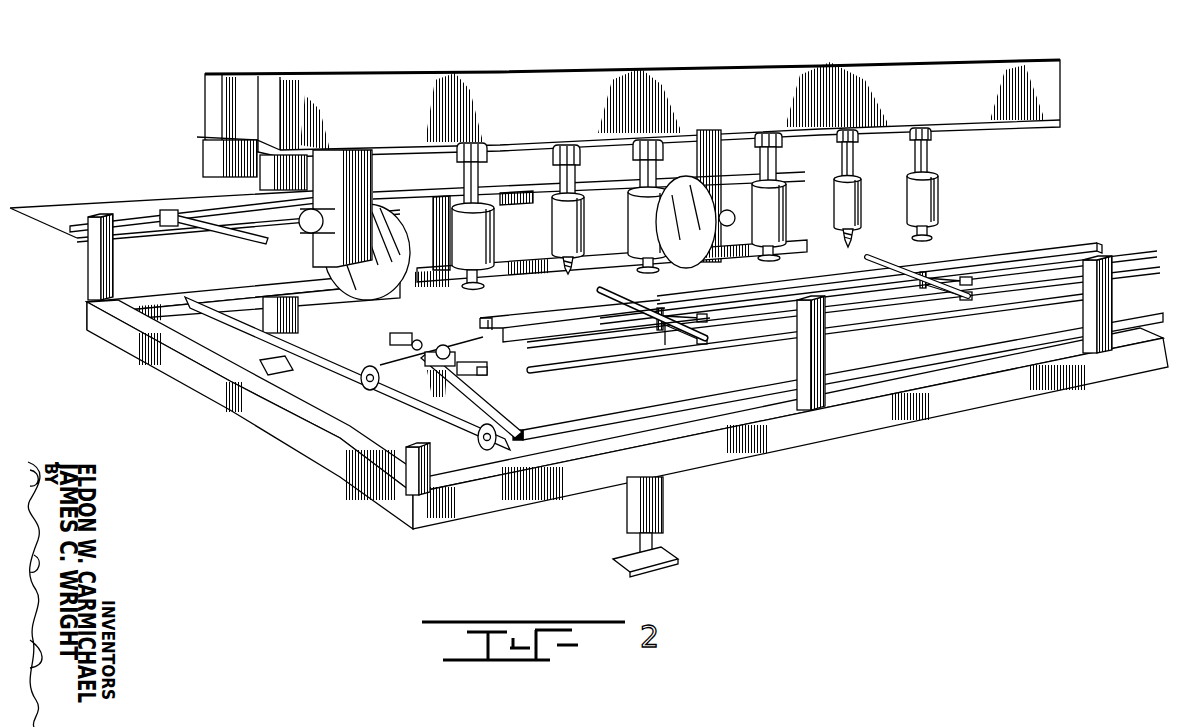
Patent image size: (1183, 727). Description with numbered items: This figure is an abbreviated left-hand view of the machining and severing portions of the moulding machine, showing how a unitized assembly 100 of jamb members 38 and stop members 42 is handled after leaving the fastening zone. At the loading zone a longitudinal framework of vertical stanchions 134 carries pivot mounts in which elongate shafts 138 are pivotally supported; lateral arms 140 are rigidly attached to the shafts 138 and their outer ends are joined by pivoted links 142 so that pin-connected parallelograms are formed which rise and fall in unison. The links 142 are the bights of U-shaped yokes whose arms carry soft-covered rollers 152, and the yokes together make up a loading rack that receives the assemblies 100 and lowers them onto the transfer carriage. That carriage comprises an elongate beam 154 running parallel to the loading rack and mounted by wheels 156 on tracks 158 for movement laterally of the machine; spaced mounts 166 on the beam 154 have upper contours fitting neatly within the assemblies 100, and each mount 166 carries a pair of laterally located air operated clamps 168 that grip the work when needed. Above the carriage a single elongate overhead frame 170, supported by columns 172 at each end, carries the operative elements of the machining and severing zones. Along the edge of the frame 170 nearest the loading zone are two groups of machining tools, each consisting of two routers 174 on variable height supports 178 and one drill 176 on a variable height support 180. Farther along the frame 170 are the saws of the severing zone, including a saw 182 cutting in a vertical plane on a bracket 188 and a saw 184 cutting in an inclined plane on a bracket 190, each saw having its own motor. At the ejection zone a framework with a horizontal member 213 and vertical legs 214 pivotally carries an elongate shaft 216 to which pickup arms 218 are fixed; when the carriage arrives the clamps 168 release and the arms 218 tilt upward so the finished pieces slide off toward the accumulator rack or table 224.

The jamb members 38 is at (565, 313).
The stop members 42 is at (528, 317).
The assemblies 100 is at (1018, 243).
The vertical stanchions 134 is at (1112, 297).
The elongate shafts 138 is at (1132, 253).
The lateral arms 140 is at (943, 273).
The links 142 is at (920, 287).
The rollers 152 is at (867, 262).
The elongate beam 154 is at (518, 362).
The wheels 156 is at (378, 353).
The tracks 158 is at (307, 350).
The mounts 166 is at (433, 350).
The air operated clamps 168 is at (403, 333).
The overhead frame 170 is at (232, 78).
The supporting columns 172 is at (253, 182).
The routers 174 is at (497, 252).
The drill 176 is at (553, 220).
The variable height supports 178 is at (463, 175).
The variable height supports 180 is at (560, 171).
The saw 182 is at (686, 260).
The saw 184 is at (388, 287).
The bracket 188 is at (705, 140).
The bracket 190 is at (362, 160).
The horizontal member 213 is at (173, 293).
The vertical columns or legs 214 is at (300, 317).
The elongate shaft 216 is at (70, 228).
The pickup arms 218 is at (228, 238).
The accumulator rack or table 224 is at (128, 207).